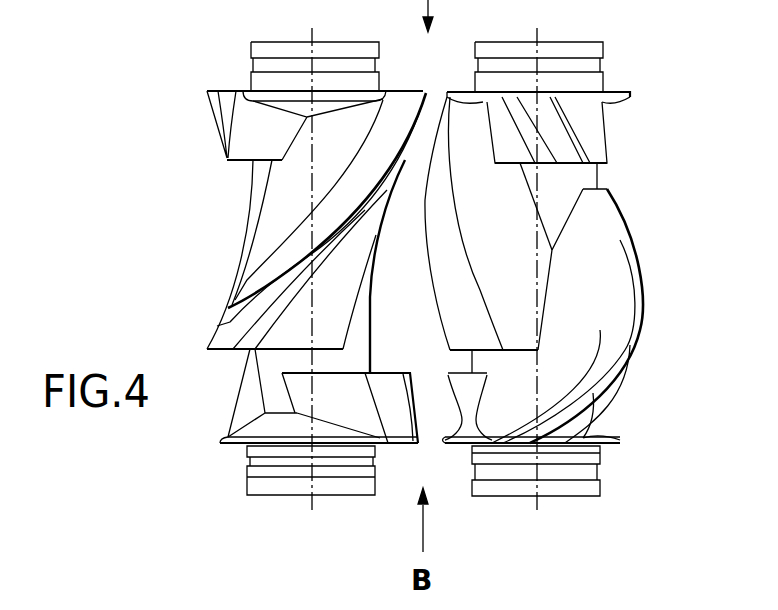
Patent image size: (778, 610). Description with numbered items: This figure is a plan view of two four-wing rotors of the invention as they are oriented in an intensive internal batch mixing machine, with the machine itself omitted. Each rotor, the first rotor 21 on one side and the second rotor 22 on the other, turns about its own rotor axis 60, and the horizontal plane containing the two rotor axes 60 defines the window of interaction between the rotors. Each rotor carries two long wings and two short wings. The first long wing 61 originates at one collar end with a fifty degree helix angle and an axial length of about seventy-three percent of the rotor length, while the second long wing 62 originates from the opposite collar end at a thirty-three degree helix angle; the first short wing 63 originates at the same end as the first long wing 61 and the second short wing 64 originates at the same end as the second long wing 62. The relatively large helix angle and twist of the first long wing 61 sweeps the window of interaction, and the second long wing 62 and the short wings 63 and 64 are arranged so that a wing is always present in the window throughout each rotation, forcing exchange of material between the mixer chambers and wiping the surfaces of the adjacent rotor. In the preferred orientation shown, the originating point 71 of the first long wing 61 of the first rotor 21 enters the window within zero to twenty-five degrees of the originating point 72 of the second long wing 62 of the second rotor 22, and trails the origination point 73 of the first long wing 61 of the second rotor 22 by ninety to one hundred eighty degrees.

The rotor axis 60 is at (315, 34).
The originating point of the first long wing of the first rotor 71 is at (425, 91).
The originating point of the second long wing of the second rotor 72 is at (448, 92).
The first short wing 63 is at (223, 118).
The first rotor 21 is at (252, 182).
The first long wing 61 is at (230, 315).
The second long wing 62 is at (432, 270).
The second short wing 64 is at (580, 143).
The second rotor 22 is at (578, 183).
The origination point of the first long wing of the second rotor 73 is at (537, 445).